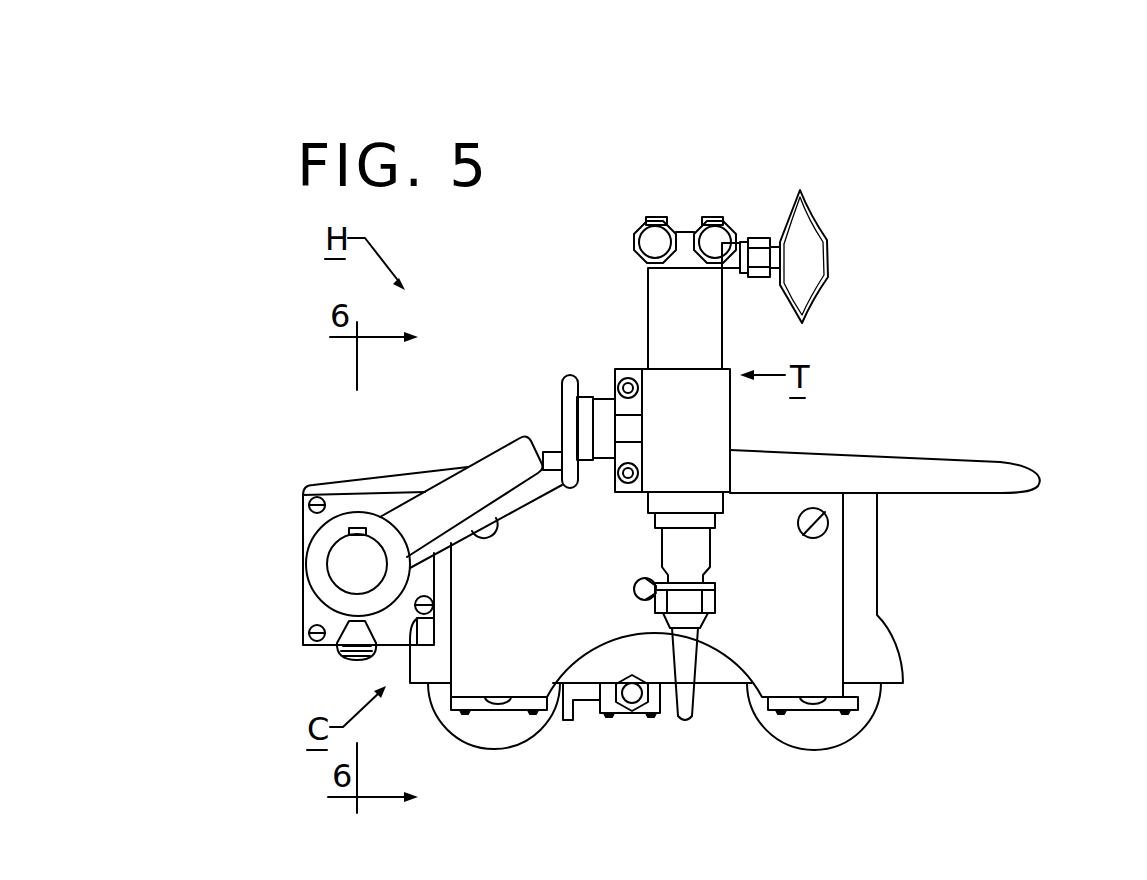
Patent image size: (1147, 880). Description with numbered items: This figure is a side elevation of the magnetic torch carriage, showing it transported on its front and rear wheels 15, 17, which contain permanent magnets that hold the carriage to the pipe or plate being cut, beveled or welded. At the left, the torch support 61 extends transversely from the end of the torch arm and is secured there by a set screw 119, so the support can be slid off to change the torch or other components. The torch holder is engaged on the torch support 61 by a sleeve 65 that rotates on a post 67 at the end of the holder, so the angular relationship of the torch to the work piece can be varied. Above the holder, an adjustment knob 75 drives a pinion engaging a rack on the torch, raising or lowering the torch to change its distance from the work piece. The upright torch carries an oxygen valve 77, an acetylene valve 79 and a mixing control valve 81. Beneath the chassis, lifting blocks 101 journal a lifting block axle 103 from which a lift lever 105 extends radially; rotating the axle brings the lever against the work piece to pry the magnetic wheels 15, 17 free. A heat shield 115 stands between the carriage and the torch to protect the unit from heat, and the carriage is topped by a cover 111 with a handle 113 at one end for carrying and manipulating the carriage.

The front wheel 15 is at (492, 732).
The rear wheel 17 is at (837, 735).
The torch support 61 is at (481, 463).
The sleeve 65 is at (310, 562).
The post 67 is at (348, 550).
The adjustment knob 75 is at (562, 390).
The oxygen valve 77 is at (657, 242).
The acetylene valve 79 is at (715, 242).
The mixing control valve 81 is at (818, 220).
The lifting block 101 is at (613, 708).
The lifting block axle 103 is at (638, 702).
The lift lever 105 is at (563, 722).
The cover 111 is at (888, 475).
The handle 113 is at (1012, 475).
The heat shield 115 is at (825, 632).
The set screw 119 is at (337, 653).